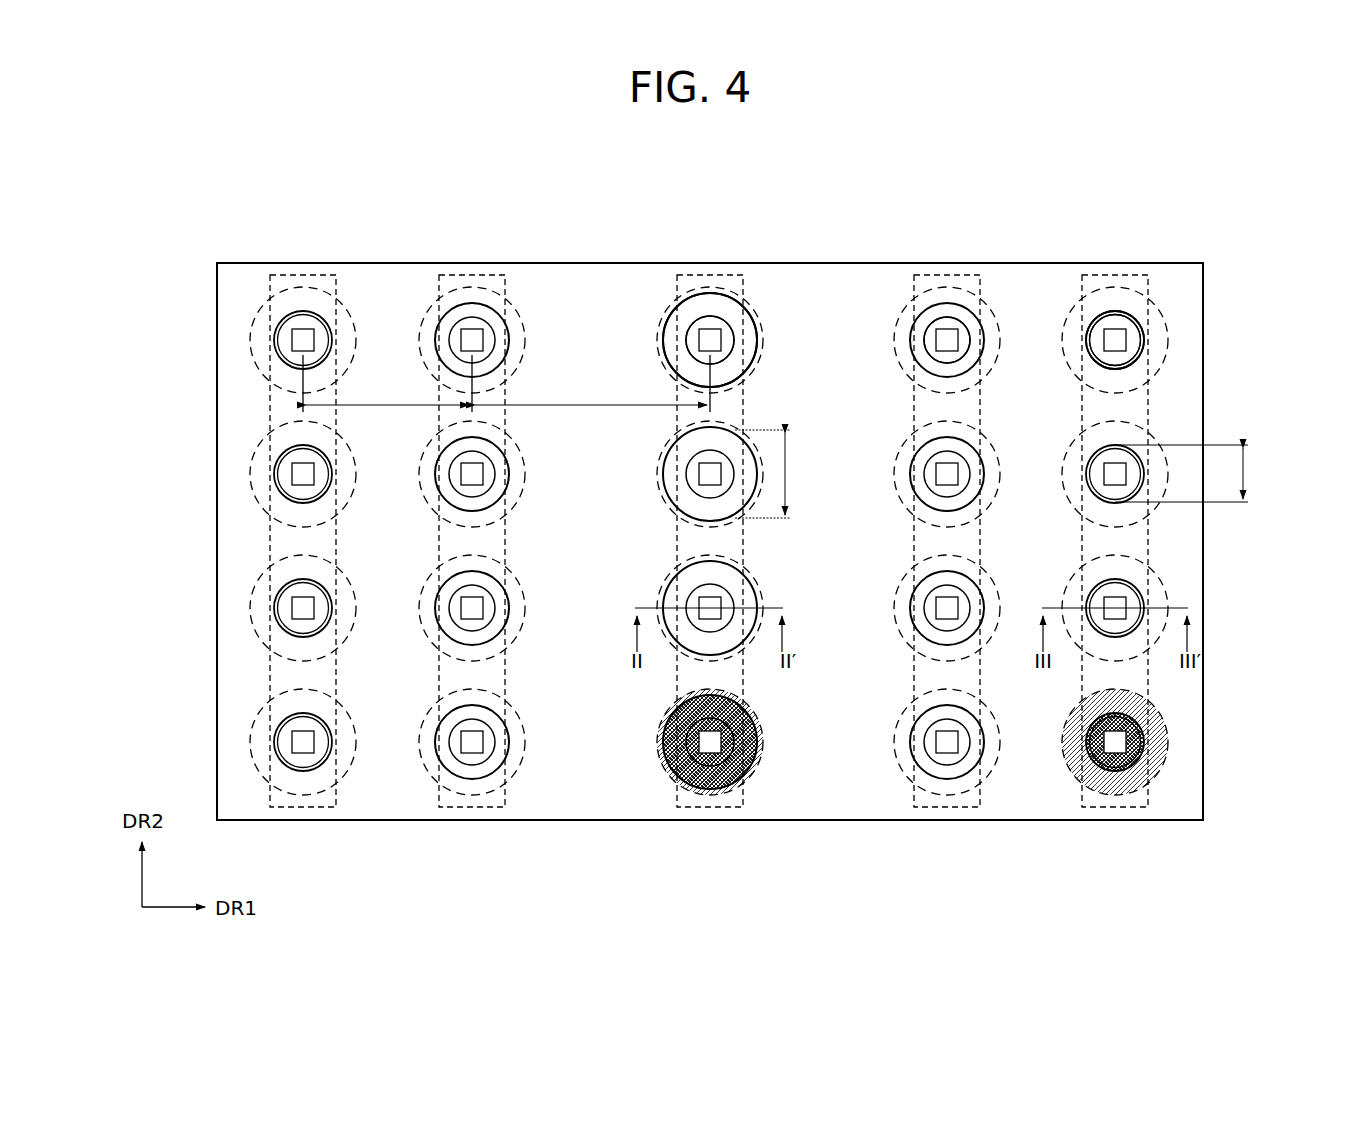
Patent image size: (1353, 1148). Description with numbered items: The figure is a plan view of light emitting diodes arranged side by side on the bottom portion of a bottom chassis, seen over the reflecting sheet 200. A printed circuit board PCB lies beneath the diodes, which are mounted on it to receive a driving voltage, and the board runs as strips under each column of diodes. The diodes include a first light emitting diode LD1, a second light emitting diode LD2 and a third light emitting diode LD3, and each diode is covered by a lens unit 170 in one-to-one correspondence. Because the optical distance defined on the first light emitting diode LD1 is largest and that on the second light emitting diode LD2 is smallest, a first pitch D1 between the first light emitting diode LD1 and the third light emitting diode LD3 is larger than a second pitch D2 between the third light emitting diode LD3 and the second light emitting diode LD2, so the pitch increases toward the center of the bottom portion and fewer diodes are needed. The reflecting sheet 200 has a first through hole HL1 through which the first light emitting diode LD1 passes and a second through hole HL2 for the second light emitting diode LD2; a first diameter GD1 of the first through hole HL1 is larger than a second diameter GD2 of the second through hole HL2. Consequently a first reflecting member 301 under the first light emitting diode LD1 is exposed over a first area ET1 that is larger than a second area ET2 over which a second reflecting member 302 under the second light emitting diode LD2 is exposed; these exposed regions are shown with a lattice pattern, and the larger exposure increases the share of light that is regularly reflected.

The reflecting sheet 200 is at (392, 276).
The printed circuit board PCB is at (1148, 405).
The first reflecting member 301 is at (670, 305).
The second reflecting member 302 is at (1073, 304).
The first light emitting diode LD1 is at (708, 330).
The second light emitting diode LD2 is at (301, 330).
The third light emitting diode LD3 is at (471, 330).
The lens unit 170 is at (716, 320).
The first through hole HL1 is at (666, 345).
The second through hole HL2 is at (1138, 331).
The first area ET1 is at (704, 777).
The second area ET2 is at (1114, 772).
The first pitch D1 is at (592, 395).
The second pitch D2 is at (387, 395).
The first diameter GD1 is at (786, 474).
The second diameter GD2 is at (1205, 473).